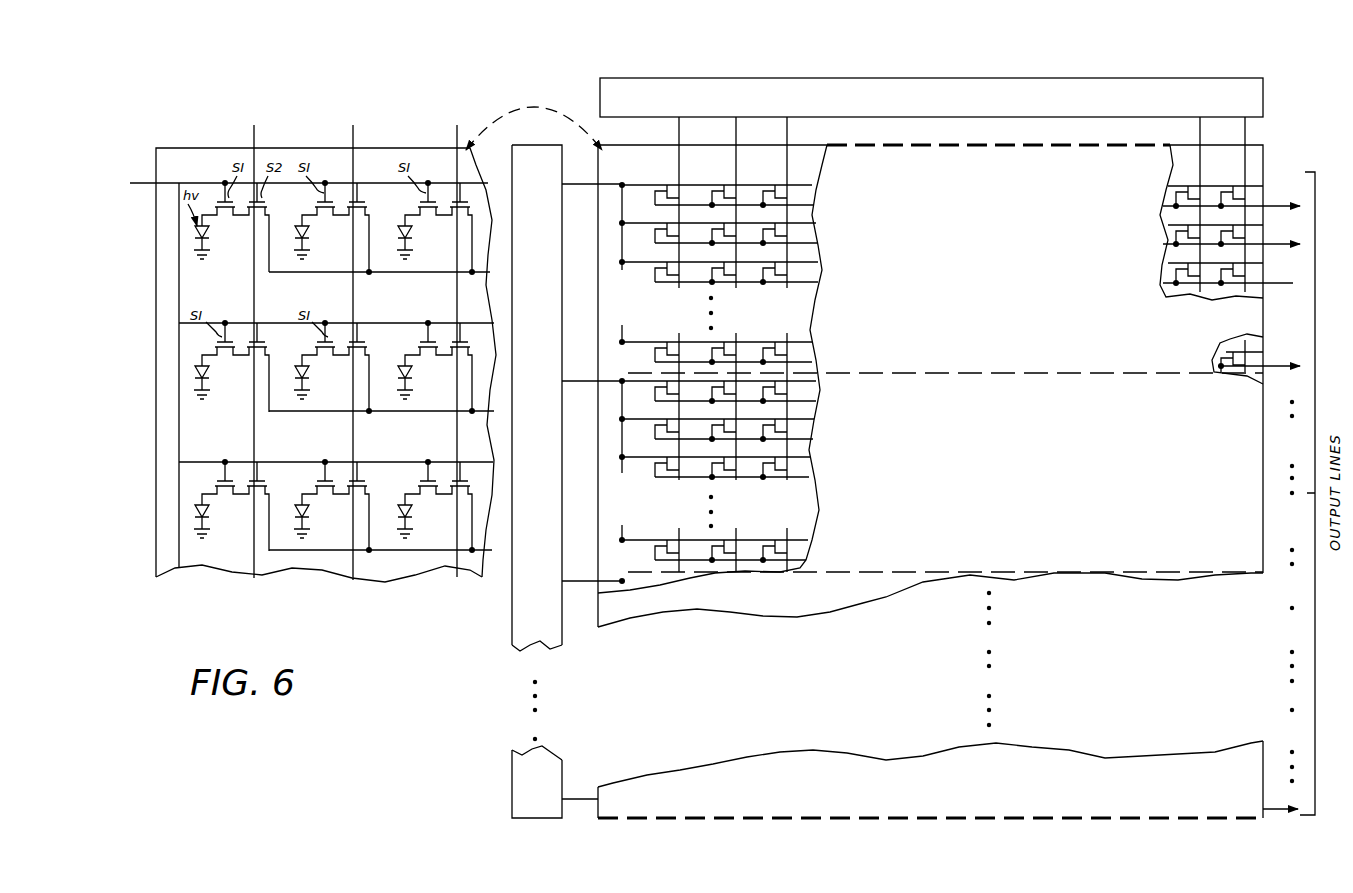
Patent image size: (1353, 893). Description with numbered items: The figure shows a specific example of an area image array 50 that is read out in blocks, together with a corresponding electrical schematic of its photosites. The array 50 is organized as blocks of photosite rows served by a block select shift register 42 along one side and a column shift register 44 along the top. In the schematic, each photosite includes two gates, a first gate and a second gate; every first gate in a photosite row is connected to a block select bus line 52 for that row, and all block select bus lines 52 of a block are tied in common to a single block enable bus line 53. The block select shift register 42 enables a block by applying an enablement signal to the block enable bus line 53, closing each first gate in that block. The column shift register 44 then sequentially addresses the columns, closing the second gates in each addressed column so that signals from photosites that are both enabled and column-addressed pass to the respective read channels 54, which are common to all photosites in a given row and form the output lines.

The block select shift register 42 is at (512, 599).
The column shift register 44 is at (1116, 81).
The area image array 50 is at (1154, 462).
The block select bus line 52 is at (196, 179).
The block enable bus line 53 is at (141, 183).
The read channel 54 is at (318, 274).